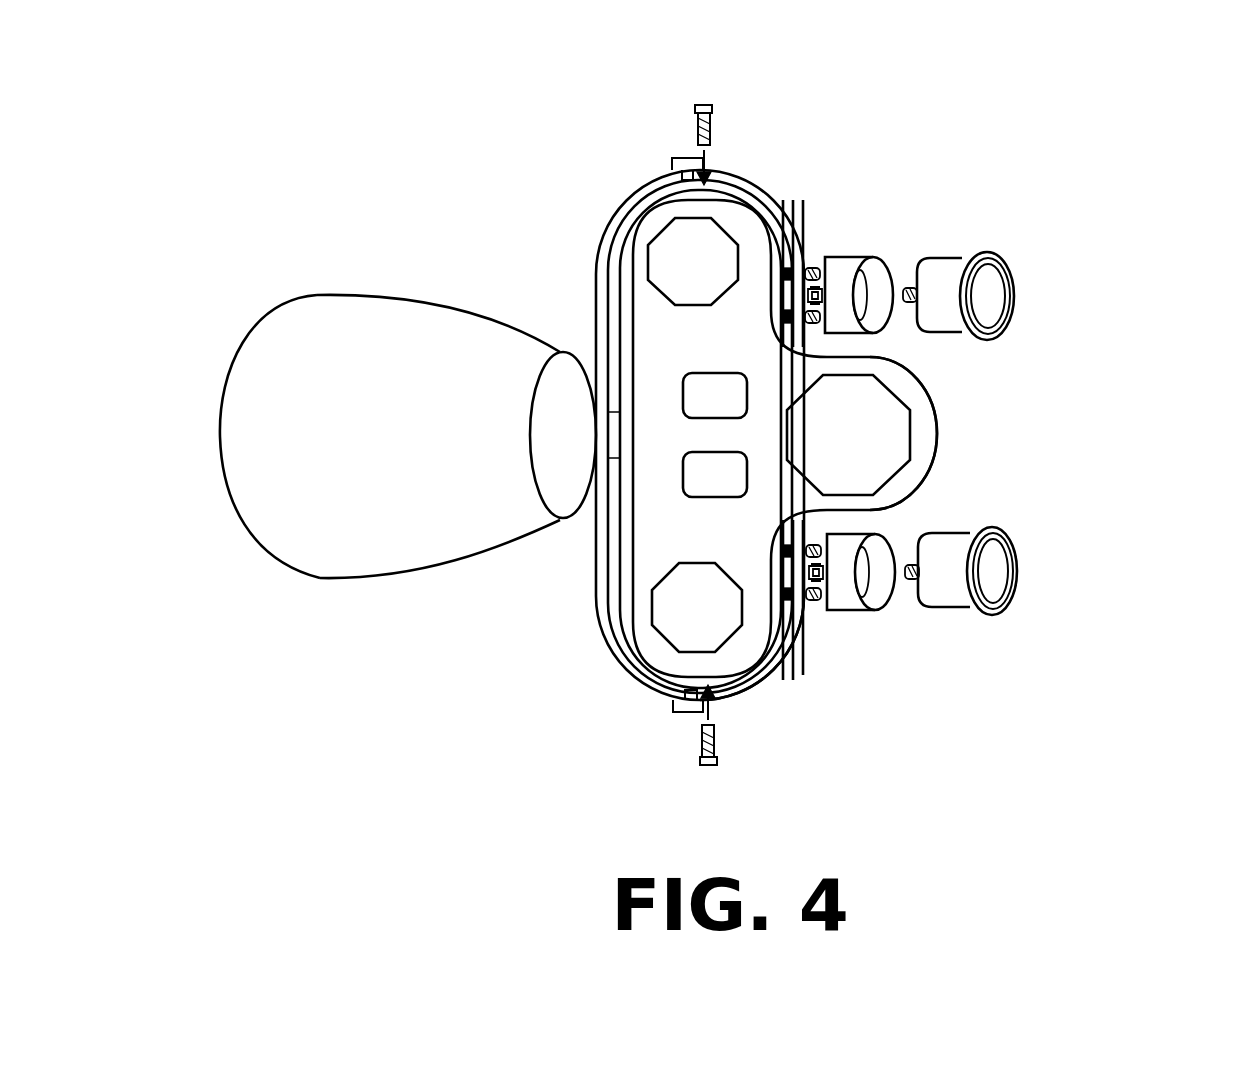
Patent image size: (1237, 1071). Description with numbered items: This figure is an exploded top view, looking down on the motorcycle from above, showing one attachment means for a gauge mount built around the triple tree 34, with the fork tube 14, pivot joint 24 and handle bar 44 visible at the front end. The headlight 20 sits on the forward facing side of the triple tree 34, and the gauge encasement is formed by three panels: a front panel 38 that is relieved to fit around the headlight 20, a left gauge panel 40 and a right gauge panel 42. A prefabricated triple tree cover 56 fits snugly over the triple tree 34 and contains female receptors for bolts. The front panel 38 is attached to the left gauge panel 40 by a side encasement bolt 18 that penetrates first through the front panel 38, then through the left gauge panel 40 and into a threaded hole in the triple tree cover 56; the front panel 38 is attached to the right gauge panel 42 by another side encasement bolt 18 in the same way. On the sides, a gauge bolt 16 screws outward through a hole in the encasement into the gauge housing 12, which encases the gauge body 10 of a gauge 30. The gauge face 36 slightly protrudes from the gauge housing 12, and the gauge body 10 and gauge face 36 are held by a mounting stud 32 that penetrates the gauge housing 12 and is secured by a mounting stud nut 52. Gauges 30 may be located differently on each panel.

The gauge body 10 is at (952, 287).
The gauge housing 12 is at (847, 598).
The fork tube 14 is at (692, 255).
The gauge bolt 16 is at (830, 610).
The side encasement bolt 18 is at (705, 760).
The headlight 20 is at (310, 408).
The pivot joint 24 is at (853, 432).
The gauge 30 is at (1030, 287).
The mounting stud 32 is at (917, 285).
The triple tree 34 is at (923, 438).
The gauge face 36 is at (1010, 283).
The front panel 38 is at (615, 203).
The left gauge panel 40 is at (773, 688).
The right gauge panel 42 is at (790, 202).
The handle bar 44 is at (720, 472).
The mounting stud nut 52 is at (825, 285).
The prefabricated triple tree cover 56 is at (625, 278).